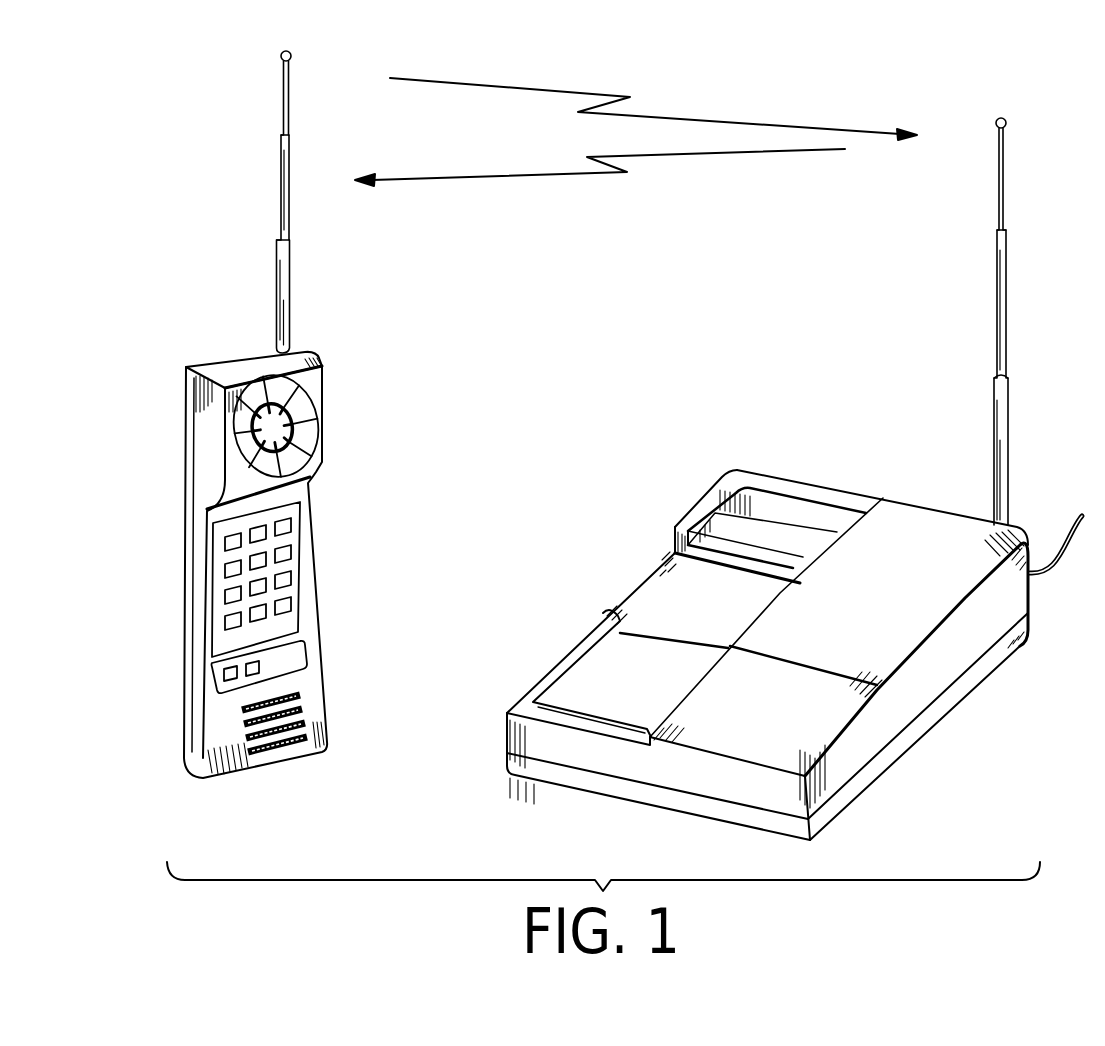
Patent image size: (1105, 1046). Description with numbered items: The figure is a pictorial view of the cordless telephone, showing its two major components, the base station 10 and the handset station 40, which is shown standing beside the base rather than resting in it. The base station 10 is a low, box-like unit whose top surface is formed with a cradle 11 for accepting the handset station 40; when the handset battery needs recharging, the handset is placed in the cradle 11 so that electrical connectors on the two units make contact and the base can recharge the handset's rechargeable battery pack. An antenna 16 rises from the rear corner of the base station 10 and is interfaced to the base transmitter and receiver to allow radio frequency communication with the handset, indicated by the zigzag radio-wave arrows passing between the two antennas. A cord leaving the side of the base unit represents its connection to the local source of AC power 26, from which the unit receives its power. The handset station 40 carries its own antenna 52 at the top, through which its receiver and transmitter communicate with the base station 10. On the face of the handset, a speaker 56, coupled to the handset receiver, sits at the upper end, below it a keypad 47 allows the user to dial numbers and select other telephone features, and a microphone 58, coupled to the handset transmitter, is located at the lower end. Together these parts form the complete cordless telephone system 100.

The cordless telephone system 100 is at (522, 467).
The handset station 40 is at (299, 414).
The antenna 52 is at (291, 278).
The speaker 56 is at (288, 440).
The keypad 47 is at (289, 553).
The microphone 58 is at (303, 711).
The base station 10 is at (782, 479).
The cradle 11 is at (650, 593).
The antenna 16 is at (994, 412).
The local source of AC power 26 is at (1078, 547).